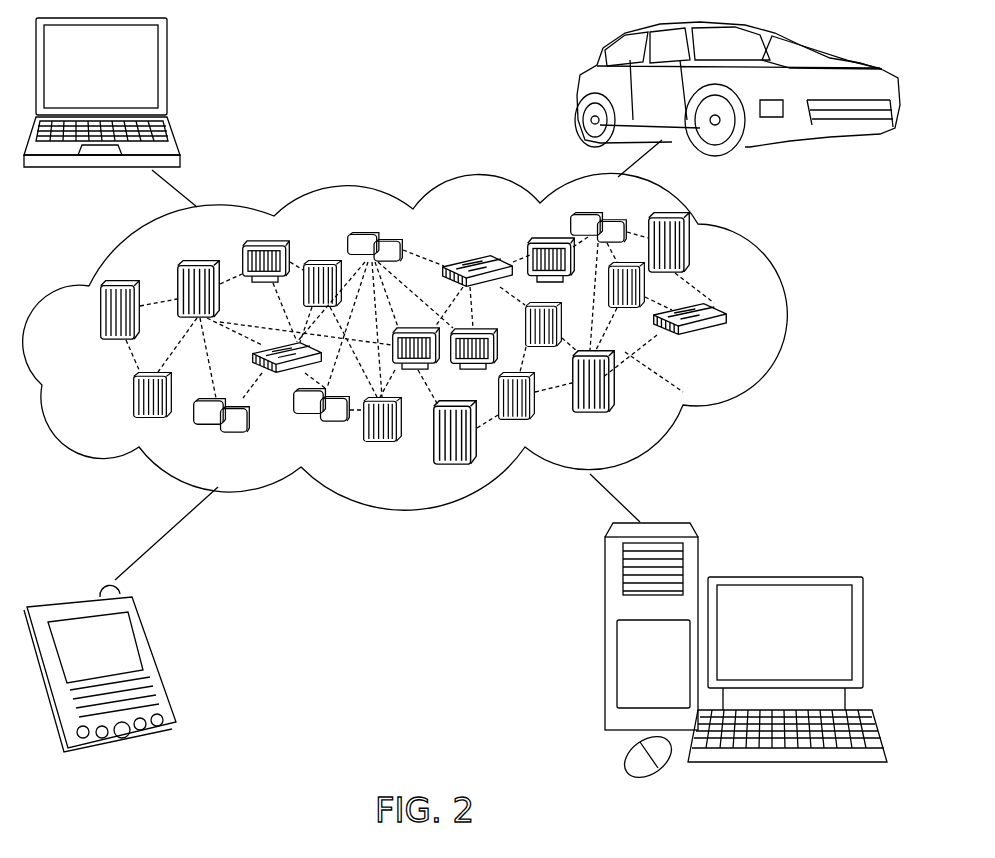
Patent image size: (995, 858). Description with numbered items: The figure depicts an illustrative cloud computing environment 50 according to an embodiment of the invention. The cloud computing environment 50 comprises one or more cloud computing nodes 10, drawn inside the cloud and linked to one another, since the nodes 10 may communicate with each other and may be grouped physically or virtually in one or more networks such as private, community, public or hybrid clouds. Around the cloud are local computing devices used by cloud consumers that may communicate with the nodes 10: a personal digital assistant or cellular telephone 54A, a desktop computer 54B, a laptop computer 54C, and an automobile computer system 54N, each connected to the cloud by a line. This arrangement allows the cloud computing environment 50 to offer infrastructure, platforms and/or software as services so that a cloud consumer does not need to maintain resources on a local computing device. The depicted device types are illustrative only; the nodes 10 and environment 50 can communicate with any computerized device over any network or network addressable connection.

The cloud computing environment 50 is at (782, 317).
The cloud computing nodes 10 is at (728, 343).
The laptop computer 54C is at (165, 78).
The automobile computer system 54N is at (578, 90).
The personal digital assistant or cellular telephone 54A is at (157, 665).
The desktop computer 54B is at (780, 576).